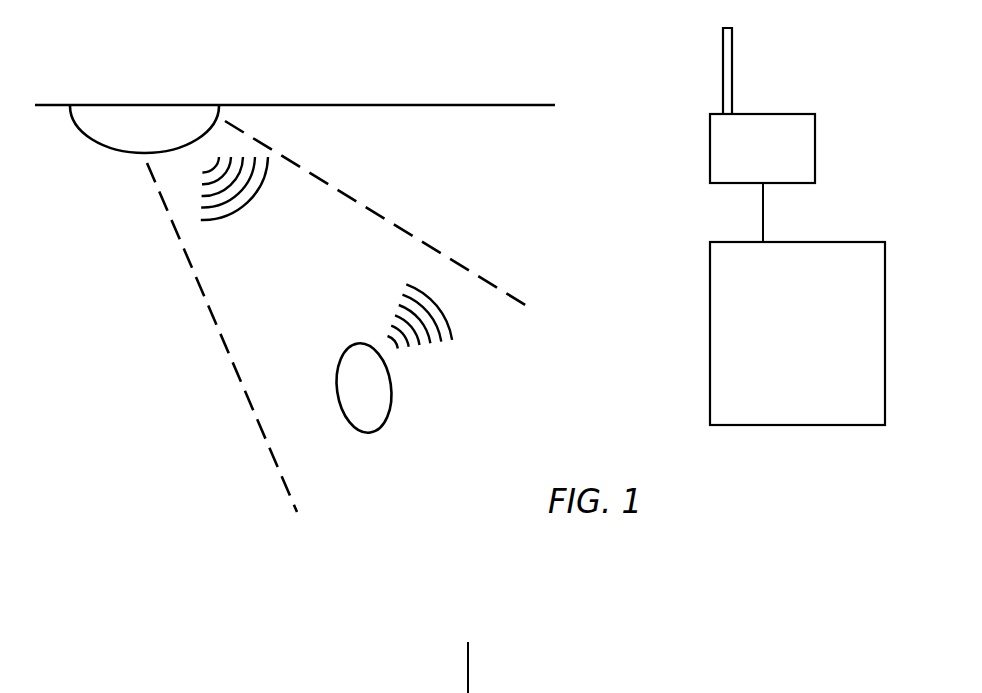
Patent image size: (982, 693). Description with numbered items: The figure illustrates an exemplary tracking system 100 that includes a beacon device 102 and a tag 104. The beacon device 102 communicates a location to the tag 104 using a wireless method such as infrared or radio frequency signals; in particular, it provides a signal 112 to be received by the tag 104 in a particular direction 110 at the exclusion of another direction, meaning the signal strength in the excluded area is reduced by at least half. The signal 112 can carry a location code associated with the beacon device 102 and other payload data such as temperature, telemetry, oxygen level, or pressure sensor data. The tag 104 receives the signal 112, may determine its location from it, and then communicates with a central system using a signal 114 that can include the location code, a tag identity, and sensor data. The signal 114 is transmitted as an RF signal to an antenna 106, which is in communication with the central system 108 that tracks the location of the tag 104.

The tracking system 100 is at (501, 66).
The beacon device 102 is at (140, 122).
The tag 104 is at (370, 390).
The antenna 106 is at (762, 140).
The central system 108 is at (785, 268).
The particular direction 110 is at (193, 278).
The signal 112 is at (240, 155).
The signal 114 is at (418, 282).